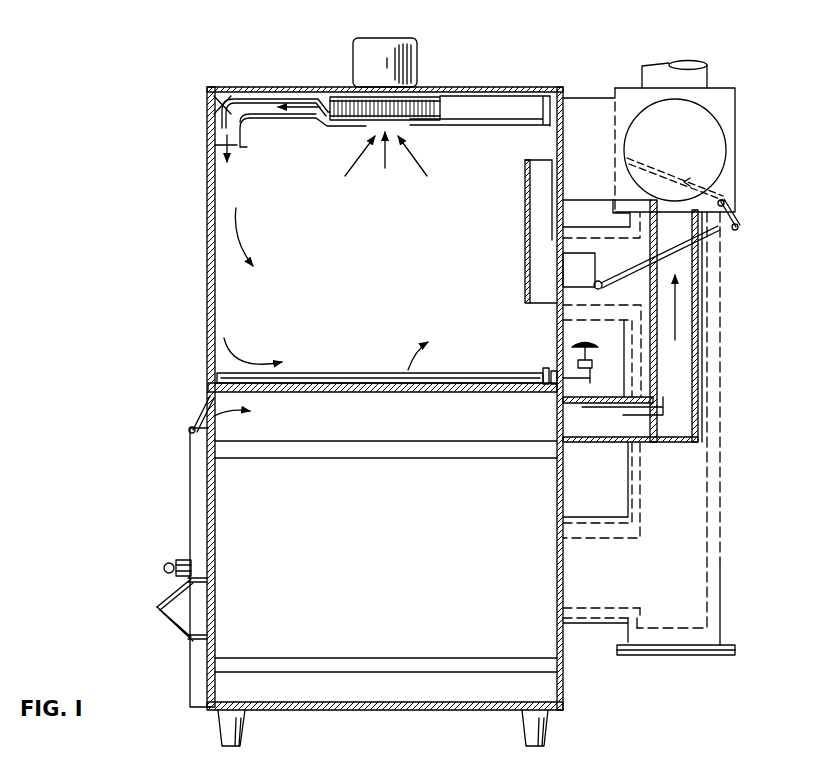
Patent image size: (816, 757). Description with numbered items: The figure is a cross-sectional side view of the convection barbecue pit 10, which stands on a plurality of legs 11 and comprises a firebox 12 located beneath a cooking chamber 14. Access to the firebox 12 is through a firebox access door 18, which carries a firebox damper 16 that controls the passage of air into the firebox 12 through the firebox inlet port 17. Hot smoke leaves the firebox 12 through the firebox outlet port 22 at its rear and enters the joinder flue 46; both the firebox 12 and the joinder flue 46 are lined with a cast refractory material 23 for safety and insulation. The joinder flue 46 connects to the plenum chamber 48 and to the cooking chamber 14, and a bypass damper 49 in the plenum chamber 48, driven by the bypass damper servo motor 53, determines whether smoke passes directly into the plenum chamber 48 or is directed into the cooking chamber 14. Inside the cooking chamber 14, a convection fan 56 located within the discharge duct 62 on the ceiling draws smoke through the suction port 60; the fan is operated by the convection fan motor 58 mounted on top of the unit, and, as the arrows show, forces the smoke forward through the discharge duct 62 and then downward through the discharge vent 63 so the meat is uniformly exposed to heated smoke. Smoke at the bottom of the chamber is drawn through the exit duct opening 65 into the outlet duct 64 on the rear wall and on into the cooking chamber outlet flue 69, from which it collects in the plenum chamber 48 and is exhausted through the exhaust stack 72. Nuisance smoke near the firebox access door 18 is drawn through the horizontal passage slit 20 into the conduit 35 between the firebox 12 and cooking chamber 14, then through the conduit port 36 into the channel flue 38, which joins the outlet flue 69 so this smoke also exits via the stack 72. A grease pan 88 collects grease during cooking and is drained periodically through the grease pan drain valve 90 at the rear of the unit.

The convection barbecue pit 10 is at (103, 97).
The legs 11 is at (222, 730).
The firebox 12 is at (396, 573).
The cooking chamber 14 is at (378, 282).
The firebox damper 16 is at (170, 598).
The firebox inlet port 17 is at (190, 641).
The firebox access door 18 is at (190, 505).
The horizontal passage slit 20 is at (190, 430).
The firebox outlet port 22 is at (565, 620).
The cast refractory material 23 is at (720, 474).
The conduit 35 is at (405, 423).
The conduit port 36 is at (560, 404).
The channel flue 38 is at (684, 378).
The joinder flue 46 is at (681, 552).
The plenum chamber 48 is at (738, 92).
The bypass damper 49 is at (738, 168).
The bypass damper servo motor 53 is at (592, 281).
The convection fan 56 is at (440, 112).
The convection fan motor 58 is at (415, 50).
The suction port 60 is at (368, 129).
The discharge duct 62 is at (212, 112).
The discharge vent 63 is at (242, 154).
The outlet duct 64 is at (525, 260).
The exit duct opening 65 is at (535, 305).
The cooking chamber outlet flue 69 is at (594, 158).
The exhaust stack 72 is at (672, 66).
The grease pan 88 is at (472, 374).
The grease pan drain valve 90 is at (600, 366).